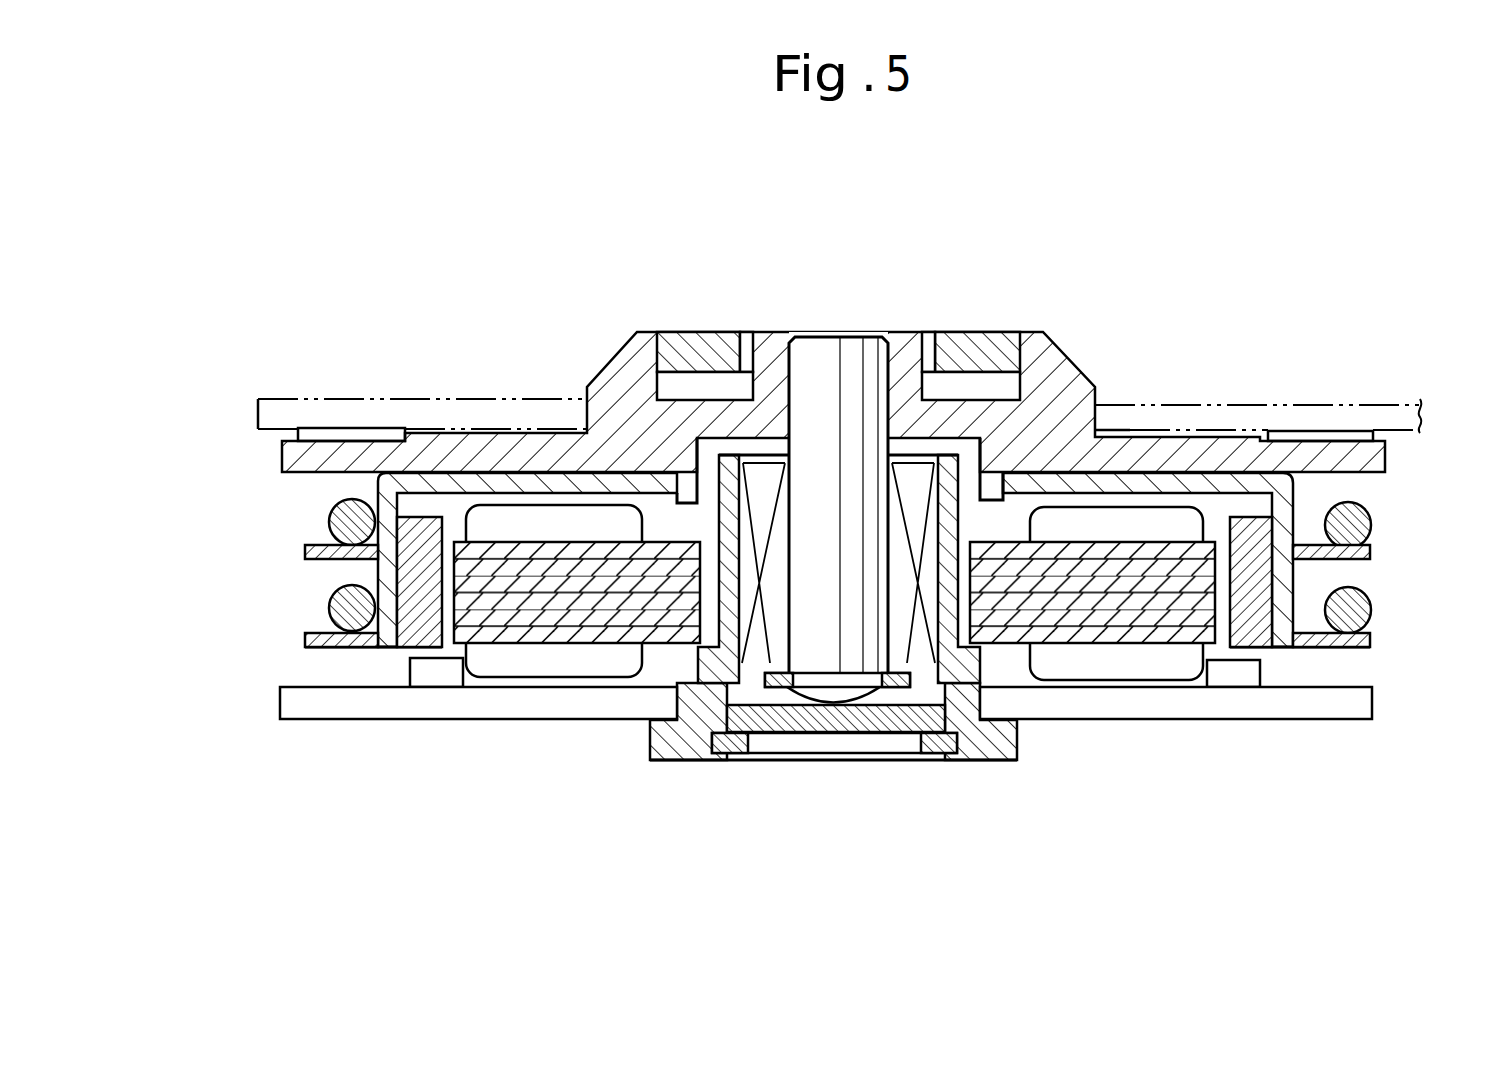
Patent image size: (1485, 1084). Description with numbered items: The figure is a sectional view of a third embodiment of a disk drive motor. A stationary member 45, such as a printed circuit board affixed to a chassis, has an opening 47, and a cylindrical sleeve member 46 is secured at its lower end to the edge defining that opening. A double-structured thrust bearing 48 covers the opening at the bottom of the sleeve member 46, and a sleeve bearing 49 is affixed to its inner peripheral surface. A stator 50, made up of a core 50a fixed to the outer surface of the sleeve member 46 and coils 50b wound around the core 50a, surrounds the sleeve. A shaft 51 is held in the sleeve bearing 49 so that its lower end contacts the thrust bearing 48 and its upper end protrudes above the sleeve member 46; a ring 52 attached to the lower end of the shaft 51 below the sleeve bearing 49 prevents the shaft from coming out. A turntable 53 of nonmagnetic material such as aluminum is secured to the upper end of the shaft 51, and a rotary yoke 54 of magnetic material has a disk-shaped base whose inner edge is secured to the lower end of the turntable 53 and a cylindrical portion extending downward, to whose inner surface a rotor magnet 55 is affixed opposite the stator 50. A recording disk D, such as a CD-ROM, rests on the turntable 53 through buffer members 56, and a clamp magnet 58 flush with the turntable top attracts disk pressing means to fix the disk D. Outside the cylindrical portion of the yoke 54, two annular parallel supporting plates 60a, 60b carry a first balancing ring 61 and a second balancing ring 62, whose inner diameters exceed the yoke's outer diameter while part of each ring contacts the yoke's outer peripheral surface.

The recording disk D is at (333, 398).
The stationary member 45 is at (1228, 720).
The cylindrical sleeve member 46 is at (690, 740).
The opening 47 is at (1003, 753).
The double-structured thrust bearing 48 is at (833, 720).
The sleeve bearing 49 is at (757, 645).
The stator 50 is at (1216, 505).
The core 50a is at (487, 635).
The coils 50b is at (580, 663).
The shaft 51 is at (830, 333).
The ring 52 is at (905, 737).
The turntable 53 is at (1057, 377).
The rotary yoke 54 is at (468, 478).
The rotor magnet 55 is at (412, 632).
The buffer members 56 is at (1333, 431).
The clamp magnet 58 is at (706, 332).
The supporting plate 60a is at (305, 553).
The supporting plate 60b is at (305, 641).
The ring 61 is at (1372, 523).
The ring 62 is at (1372, 612).